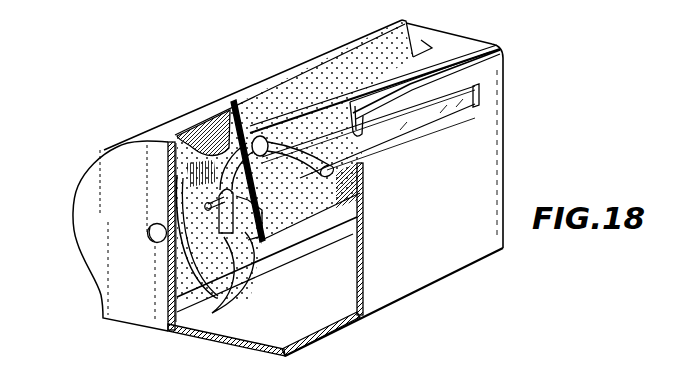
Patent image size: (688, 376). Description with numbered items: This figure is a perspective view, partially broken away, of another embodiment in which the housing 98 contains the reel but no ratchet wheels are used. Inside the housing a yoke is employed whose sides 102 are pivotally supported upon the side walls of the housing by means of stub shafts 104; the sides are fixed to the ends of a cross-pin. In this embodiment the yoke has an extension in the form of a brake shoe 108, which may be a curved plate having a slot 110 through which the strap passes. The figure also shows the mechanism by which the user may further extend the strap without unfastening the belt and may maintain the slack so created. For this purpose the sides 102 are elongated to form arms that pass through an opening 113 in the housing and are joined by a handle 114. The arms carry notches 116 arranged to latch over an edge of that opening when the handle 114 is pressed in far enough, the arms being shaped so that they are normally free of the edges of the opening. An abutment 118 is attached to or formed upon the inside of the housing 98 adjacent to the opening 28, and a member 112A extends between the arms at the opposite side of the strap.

The housing 98 is at (72, 205).
The abutment 118 is at (198, 143).
The opening 28 is at (233, 101).
The member 112A is at (259, 136).
The notches 116 is at (316, 161).
The opening 113 is at (481, 86).
The handle 114 is at (478, 101).
The stub shafts 104 is at (217, 206).
The sides 102 is at (222, 210).
The slot 110 is at (303, 247).
The brake shoe 108 is at (277, 272).